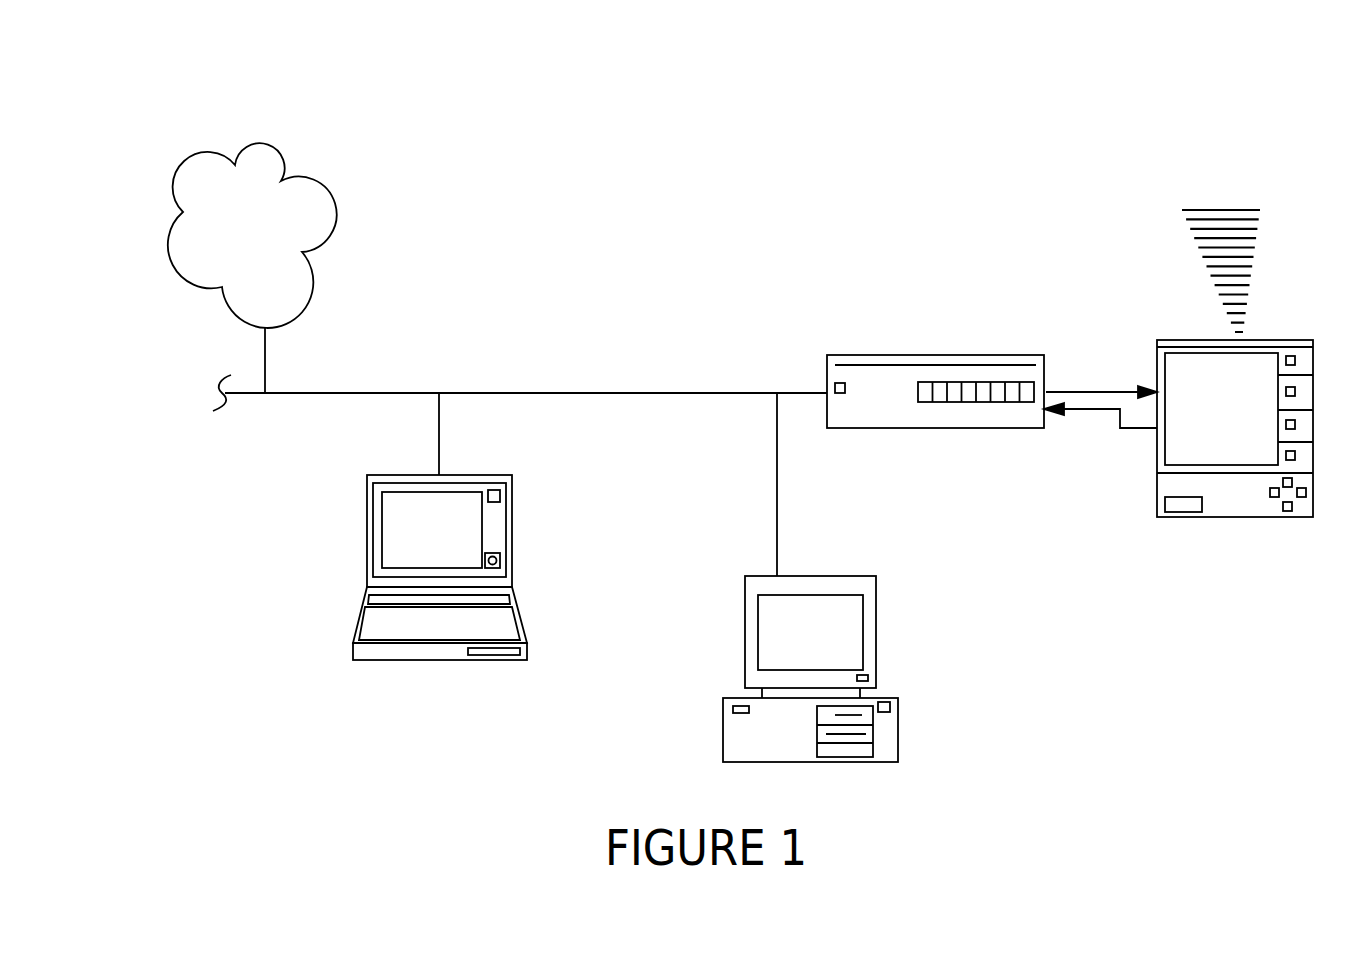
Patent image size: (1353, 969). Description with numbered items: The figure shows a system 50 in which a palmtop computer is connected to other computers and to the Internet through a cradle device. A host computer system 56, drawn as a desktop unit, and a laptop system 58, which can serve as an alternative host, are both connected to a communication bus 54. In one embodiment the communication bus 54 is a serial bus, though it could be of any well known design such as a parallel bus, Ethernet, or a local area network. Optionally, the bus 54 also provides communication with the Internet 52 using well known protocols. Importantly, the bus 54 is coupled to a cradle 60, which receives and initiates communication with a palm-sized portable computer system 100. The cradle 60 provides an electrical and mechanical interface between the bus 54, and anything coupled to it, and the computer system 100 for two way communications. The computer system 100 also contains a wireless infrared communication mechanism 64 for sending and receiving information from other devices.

The system 50 is at (139, 34).
The Internet 52 is at (327, 180).
The communication bus 54 is at (541, 393).
The host computer system 56 is at (876, 604).
The laptop system 58 is at (481, 475).
The cradle 60 is at (965, 355).
The wireless infrared communication mechanism 64 is at (1183, 254).
The portable computer system 100 is at (1278, 340).